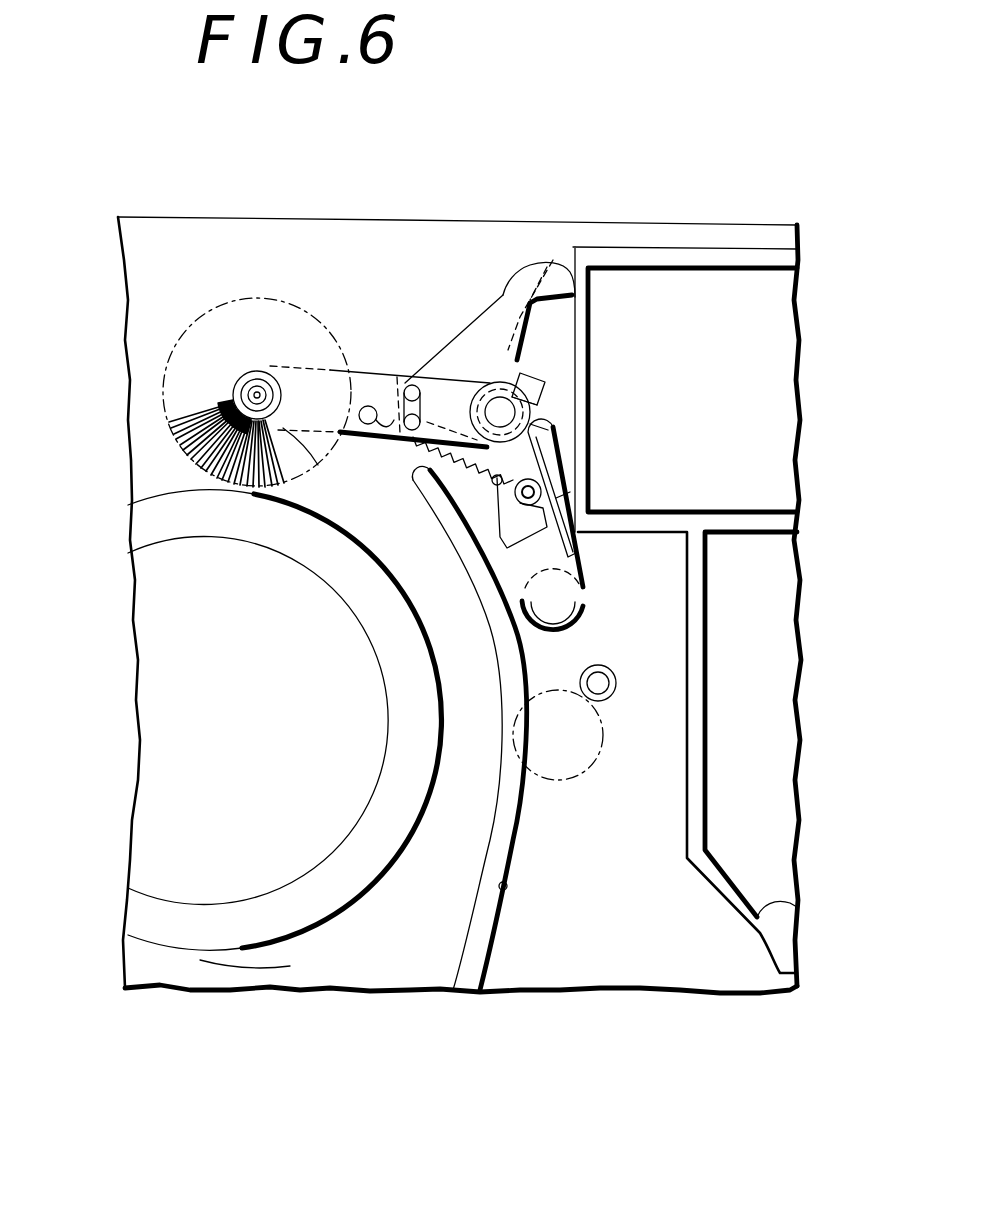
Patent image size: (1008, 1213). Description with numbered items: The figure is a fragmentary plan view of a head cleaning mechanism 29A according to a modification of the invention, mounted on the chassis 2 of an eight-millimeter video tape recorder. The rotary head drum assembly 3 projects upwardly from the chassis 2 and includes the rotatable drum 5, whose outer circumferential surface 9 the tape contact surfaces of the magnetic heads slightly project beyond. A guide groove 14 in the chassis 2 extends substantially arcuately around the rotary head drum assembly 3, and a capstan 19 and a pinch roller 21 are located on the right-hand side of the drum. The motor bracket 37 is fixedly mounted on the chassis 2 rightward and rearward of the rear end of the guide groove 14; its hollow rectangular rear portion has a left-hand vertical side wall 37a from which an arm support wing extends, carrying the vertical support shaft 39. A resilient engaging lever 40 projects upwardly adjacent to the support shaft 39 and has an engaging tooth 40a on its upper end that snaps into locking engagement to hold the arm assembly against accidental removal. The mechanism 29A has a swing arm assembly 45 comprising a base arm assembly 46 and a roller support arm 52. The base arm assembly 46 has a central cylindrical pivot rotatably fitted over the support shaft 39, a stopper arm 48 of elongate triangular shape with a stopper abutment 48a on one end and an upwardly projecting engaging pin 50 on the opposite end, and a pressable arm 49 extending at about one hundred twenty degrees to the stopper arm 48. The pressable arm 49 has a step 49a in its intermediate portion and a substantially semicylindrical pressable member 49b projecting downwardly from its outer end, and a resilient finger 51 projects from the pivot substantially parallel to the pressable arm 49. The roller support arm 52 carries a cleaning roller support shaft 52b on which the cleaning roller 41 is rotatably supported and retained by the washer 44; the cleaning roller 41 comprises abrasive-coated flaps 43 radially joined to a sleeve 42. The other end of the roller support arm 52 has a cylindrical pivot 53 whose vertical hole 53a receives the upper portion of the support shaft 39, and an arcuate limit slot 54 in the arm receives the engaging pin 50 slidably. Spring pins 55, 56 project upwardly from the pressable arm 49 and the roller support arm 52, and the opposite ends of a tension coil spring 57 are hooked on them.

The chassis 2 is at (802, 684).
The rotary head drum assembly 3 is at (362, 900).
The rotatable drum 5 is at (300, 912).
The outer circumferential surface 9 is at (237, 952).
The guide groove 14 is at (507, 887).
The capstan 19 is at (612, 702).
The pinch roller 21 is at (600, 745).
The head cleaning mechanism 29A is at (408, 282).
The motor bracket 37 is at (737, 247).
The left-hand vertical side wall 37a is at (582, 293).
The vertical support shaft 39 is at (481, 382).
The resilient engaging lever 40 is at (545, 374).
The engaging tooth 40a is at (548, 392).
The cleaning roller 41 is at (191, 323).
The sleeve 42 is at (235, 390).
The flaps 43 is at (186, 449).
The washer 44 is at (246, 373).
The swing arm assembly 45 is at (375, 370).
The base arm assembly 46 is at (440, 336).
The stopper arm 48 is at (503, 295).
The stopper abutment 48a is at (547, 267).
The pressable arm 49 is at (497, 630).
The step 49a is at (513, 527).
The pressable member 49b is at (578, 620).
The engaging pin 50 is at (410, 385).
The resilient finger 51 is at (566, 483).
The roller support arm 52 is at (350, 442).
The cleaning roller support shaft 52b is at (268, 379).
The cylindrical pivot 53 is at (535, 421).
The vertical hole 53a is at (537, 413).
The limit slot 54 is at (398, 448).
The spring pin 55 is at (553, 487).
The spring pin 56 is at (367, 406).
The tension coil spring 57 is at (460, 490).